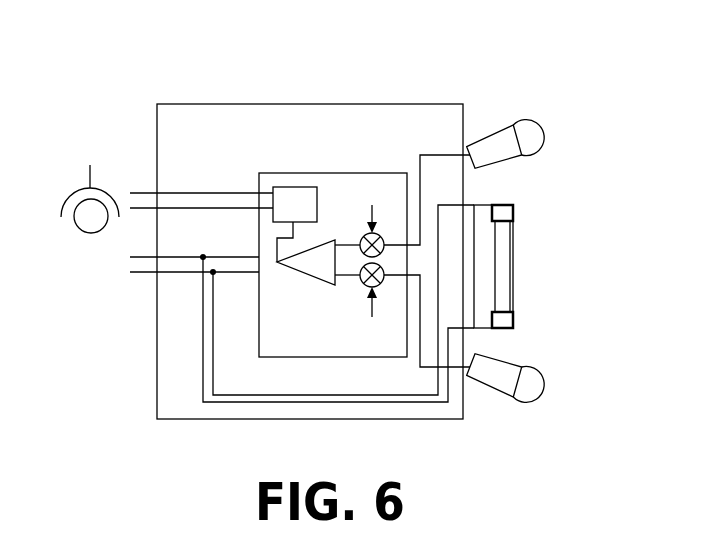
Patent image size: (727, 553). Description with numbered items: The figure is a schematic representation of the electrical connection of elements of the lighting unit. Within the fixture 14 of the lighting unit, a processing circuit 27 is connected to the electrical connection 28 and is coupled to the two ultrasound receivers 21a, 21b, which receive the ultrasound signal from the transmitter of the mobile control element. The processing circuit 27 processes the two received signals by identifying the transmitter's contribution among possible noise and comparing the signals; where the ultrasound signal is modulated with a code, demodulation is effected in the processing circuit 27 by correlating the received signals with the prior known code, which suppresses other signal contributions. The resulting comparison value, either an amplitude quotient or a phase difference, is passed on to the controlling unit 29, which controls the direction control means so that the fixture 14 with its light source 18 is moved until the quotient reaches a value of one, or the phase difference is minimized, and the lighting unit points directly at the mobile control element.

The fixture 14 is at (361, 88).
The light source 18 is at (514, 270).
The receiver 21a is at (545, 133).
The receiver 21b is at (545, 386).
The processing circuit 27 is at (312, 345).
The electrical connection 28 is at (130, 268).
The controlling unit 29 is at (294, 186).